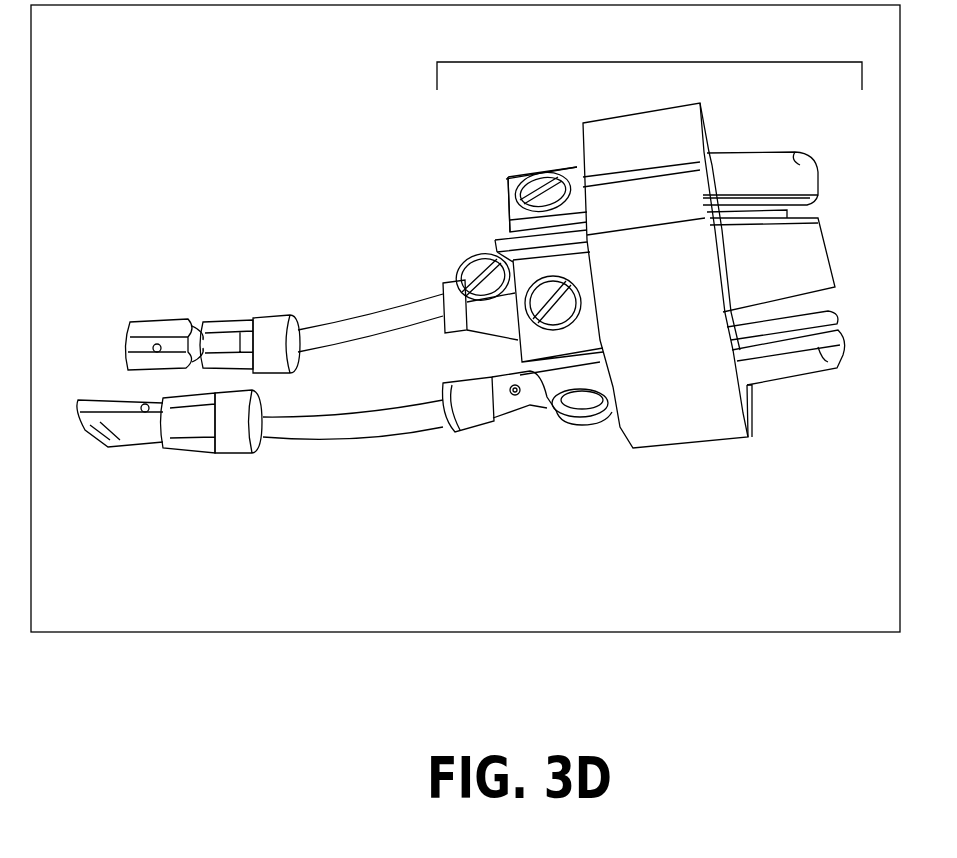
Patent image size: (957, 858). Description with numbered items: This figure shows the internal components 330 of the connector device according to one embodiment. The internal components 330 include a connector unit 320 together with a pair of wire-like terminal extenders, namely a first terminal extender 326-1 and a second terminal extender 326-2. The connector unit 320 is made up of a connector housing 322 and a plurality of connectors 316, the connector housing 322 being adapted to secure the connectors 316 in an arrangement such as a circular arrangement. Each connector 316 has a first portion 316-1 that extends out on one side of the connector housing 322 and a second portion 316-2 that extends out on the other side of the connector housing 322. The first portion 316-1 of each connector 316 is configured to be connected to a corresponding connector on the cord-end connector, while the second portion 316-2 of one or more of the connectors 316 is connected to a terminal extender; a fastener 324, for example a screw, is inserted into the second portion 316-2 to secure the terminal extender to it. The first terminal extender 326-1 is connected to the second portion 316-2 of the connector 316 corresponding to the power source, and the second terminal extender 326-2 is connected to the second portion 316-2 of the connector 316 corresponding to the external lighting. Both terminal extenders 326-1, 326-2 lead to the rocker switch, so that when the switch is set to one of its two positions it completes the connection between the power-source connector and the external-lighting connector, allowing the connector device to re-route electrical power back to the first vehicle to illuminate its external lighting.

The internal components 330 is at (223, 48).
The connector unit 320 is at (649, 231).
The connector housing 322 is at (652, 437).
The fastener 324 is at (536, 180).
The connector 316 is at (818, 350).
The first portion 316-1 is at (790, 166).
The second portion 316-2 is at (508, 193).
The first terminal extender 326-1 is at (332, 440).
The second terminal extender 326-2 is at (319, 320).